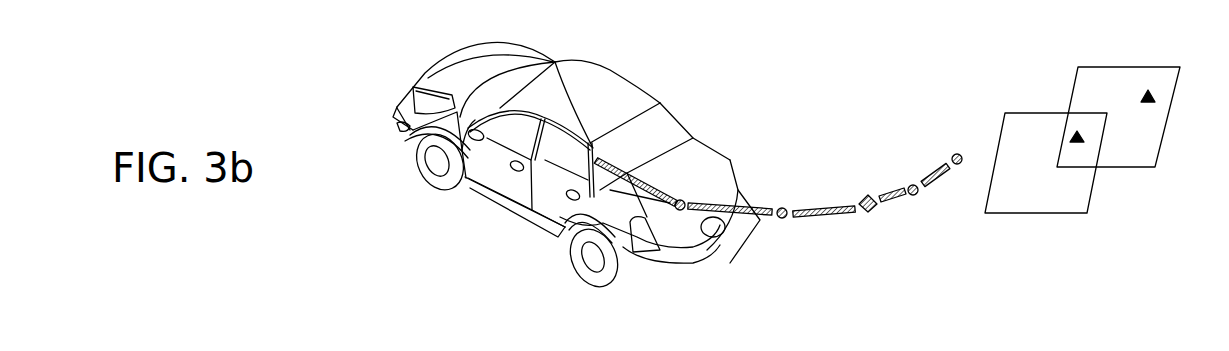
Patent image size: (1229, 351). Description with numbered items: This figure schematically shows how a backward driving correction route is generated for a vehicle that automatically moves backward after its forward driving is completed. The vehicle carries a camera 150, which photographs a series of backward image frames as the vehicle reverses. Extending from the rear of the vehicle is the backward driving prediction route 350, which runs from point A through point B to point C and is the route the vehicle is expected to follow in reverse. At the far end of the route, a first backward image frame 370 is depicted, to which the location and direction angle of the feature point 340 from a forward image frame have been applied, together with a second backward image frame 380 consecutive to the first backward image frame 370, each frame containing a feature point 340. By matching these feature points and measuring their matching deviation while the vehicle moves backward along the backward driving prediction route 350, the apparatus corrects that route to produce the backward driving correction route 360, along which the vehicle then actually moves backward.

The camera 150 is at (690, 255).
The feature point 340 is at (1073, 137).
The backward driving prediction route 350 is at (757, 219).
The backward driving correction route 360 is at (933, 174).
The first backward image frame 370 is at (1003, 213).
The second backward image frame 380 is at (1137, 168).